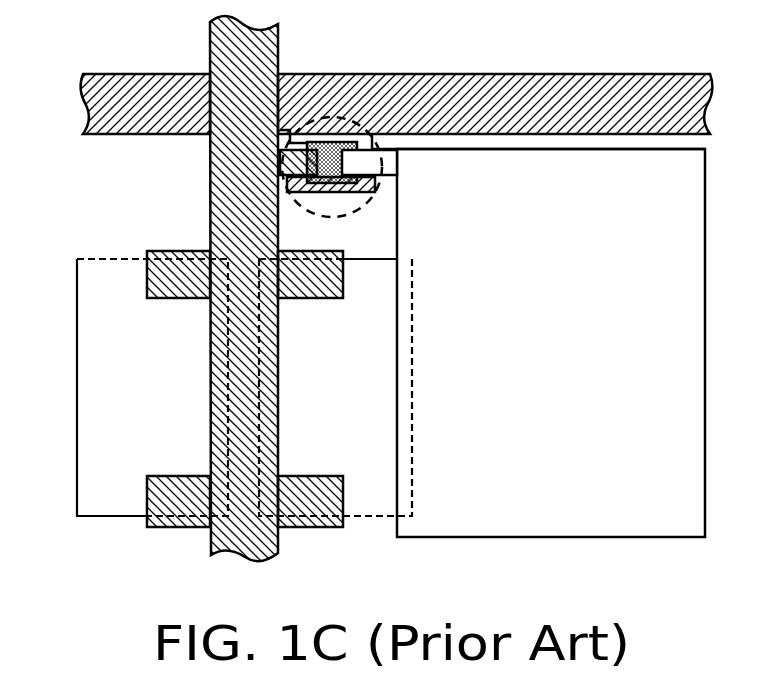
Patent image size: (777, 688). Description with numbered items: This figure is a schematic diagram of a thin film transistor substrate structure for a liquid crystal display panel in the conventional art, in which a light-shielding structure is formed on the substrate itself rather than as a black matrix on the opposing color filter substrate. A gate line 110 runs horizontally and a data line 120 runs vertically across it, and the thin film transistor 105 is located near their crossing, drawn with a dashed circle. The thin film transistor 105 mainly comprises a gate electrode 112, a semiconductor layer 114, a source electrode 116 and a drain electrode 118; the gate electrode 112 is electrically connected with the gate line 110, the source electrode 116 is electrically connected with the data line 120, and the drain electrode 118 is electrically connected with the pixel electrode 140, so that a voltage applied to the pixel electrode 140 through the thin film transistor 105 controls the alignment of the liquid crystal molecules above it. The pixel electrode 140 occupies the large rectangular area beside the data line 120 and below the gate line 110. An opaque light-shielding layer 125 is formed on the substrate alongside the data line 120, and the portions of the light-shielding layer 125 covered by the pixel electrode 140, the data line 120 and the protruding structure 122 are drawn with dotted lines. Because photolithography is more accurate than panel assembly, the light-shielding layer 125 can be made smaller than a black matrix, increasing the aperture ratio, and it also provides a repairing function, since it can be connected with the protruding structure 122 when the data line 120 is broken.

The thin film transistor 105 is at (343, 102).
The gate line 110 is at (570, 88).
The gate electrode 112 is at (291, 196).
The semiconductor layer 114 is at (327, 155).
The source electrode 116 is at (300, 140).
The drain electrode 118 is at (378, 140).
The data line 120 is at (210, 48).
The protruding structure 122 is at (160, 251).
The light-shielding layer 125 is at (88, 445).
The pixel electrode 140 is at (570, 530).